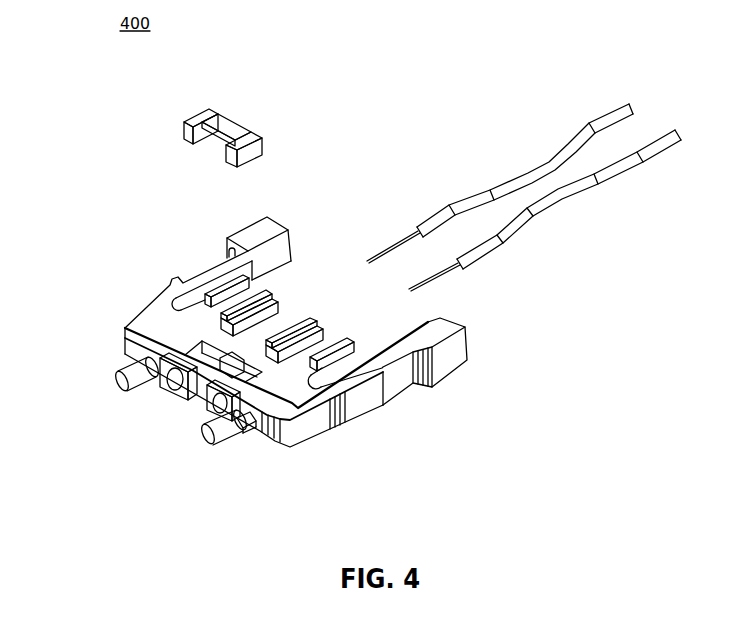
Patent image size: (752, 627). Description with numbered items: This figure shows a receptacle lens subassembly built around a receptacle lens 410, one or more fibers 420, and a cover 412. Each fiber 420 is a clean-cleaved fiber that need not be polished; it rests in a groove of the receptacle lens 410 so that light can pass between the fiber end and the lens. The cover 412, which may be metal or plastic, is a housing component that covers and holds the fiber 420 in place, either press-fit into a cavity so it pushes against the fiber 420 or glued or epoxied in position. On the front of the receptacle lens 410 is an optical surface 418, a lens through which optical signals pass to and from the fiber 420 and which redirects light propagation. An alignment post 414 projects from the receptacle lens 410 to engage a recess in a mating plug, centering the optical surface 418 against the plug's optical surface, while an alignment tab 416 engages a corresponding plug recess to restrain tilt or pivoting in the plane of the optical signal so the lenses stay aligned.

The receptacle lens 410 is at (330, 440).
The cover 412 is at (186, 99).
The alignment post 414 is at (185, 453).
The alignment tab 416 is at (255, 447).
The optical surface 418 is at (155, 401).
The fiber 420 is at (537, 148).